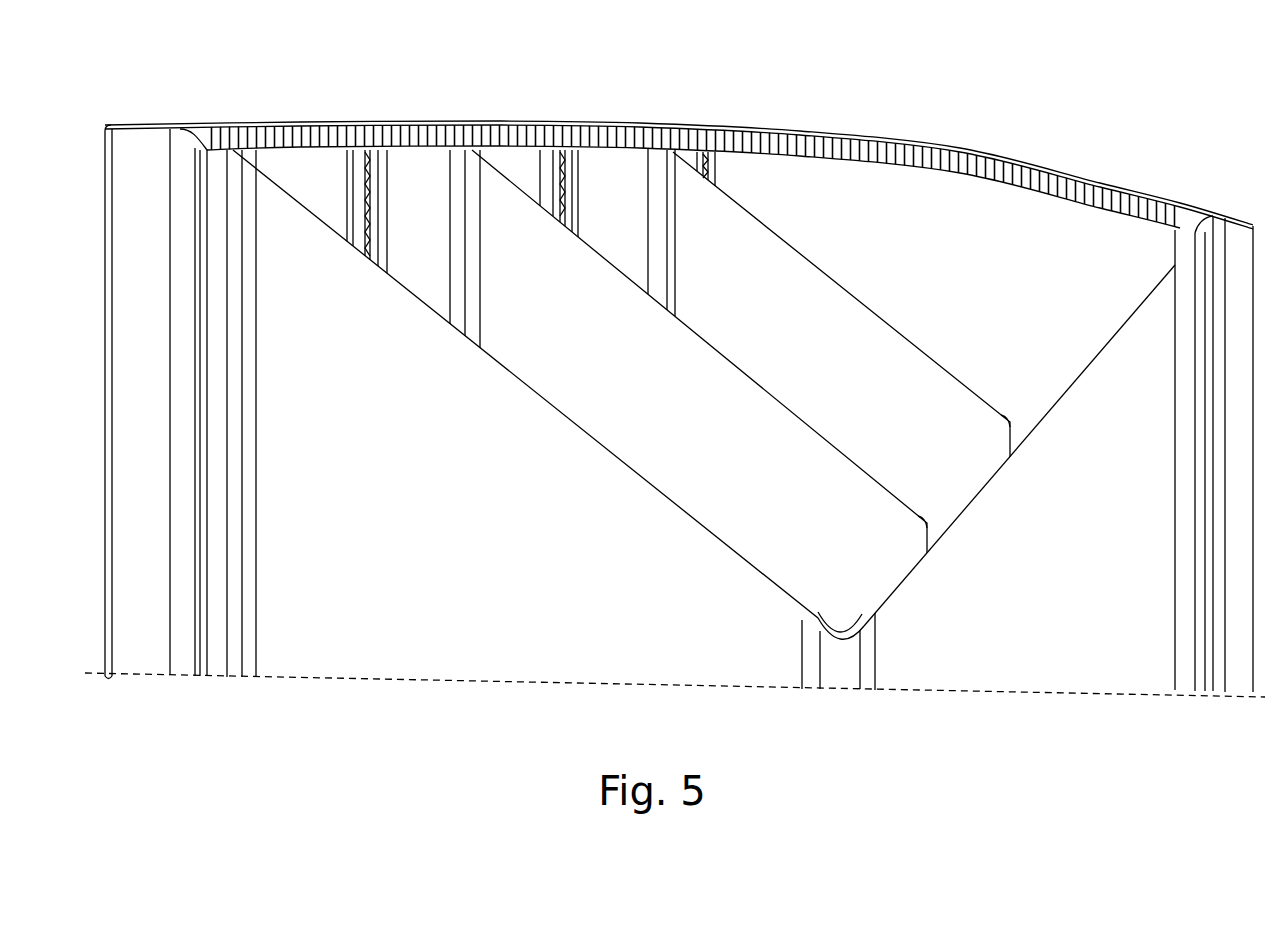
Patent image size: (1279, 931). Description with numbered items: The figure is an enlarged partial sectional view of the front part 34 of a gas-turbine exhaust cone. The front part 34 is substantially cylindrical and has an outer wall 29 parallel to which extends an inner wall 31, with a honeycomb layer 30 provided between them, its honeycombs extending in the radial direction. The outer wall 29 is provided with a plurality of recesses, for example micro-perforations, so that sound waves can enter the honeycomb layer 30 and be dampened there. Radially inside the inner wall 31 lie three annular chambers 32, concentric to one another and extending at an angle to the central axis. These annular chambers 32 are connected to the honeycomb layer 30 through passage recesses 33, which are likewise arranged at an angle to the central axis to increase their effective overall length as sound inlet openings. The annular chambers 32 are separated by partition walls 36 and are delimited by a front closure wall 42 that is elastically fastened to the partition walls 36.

The outer wall 29 is at (798, 124).
The honeycomb layer 30 is at (925, 147).
The inner wall 31 is at (858, 166).
The annular chambers 32 is at (674, 447).
The passage recesses 33 is at (382, 137).
The front part 34 is at (679, 130).
The partition walls 36 is at (557, 414).
The front closure wall 42 is at (990, 478).